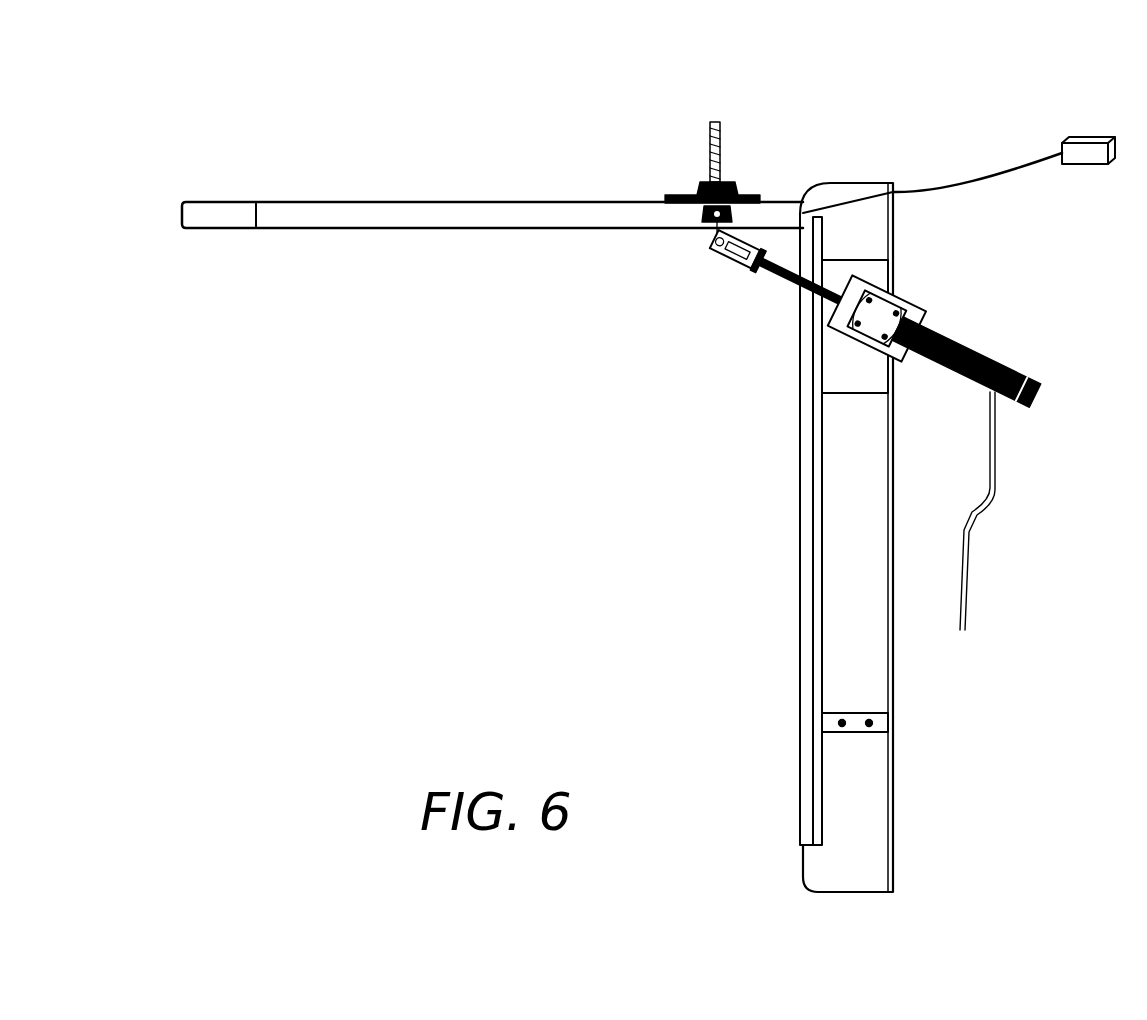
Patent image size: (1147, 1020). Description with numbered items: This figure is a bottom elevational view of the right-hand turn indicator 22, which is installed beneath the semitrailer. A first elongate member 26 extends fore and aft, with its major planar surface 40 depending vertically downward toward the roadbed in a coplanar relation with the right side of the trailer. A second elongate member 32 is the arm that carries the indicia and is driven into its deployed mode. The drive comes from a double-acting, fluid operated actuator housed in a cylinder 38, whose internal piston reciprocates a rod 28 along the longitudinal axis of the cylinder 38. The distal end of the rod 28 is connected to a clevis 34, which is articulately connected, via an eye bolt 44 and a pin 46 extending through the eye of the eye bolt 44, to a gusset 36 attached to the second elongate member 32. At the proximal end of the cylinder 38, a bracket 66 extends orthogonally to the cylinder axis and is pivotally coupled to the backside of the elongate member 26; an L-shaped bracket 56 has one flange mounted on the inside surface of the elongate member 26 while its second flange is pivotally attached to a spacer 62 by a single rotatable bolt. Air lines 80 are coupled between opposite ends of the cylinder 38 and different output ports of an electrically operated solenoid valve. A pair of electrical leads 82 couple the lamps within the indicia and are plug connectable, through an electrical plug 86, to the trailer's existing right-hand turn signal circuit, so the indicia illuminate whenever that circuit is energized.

The right-hand turn indicator 22 is at (848, 90).
The elongate member 26 is at (800, 628).
The rod 28 is at (810, 332).
The second elongate member 32 is at (345, 200).
The clevis 34 is at (716, 283).
The gusset 36 is at (740, 192).
The cylinder 38 is at (985, 323).
The major planar surface 40 is at (800, 530).
The eye bolt 44 is at (712, 248).
The pin 46 is at (716, 122).
The L-shaped bracket 56 is at (900, 390).
The spacer 62 is at (927, 291).
The bracket 66 is at (914, 268).
The air lines 80 is at (995, 505).
The electrical leads 82 is at (965, 187).
The electrical plug 86 is at (1072, 140).